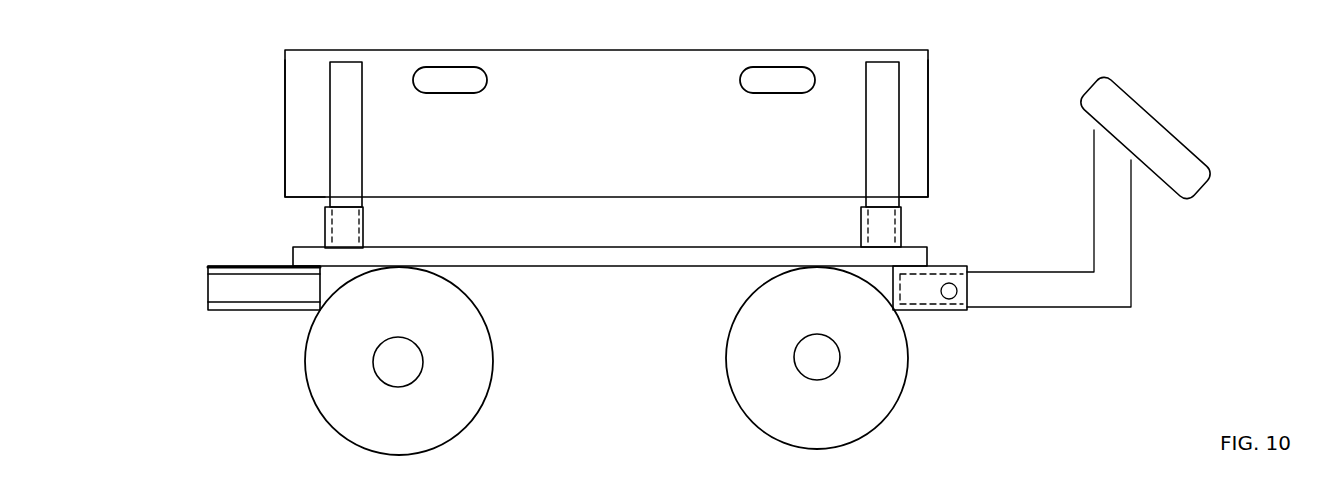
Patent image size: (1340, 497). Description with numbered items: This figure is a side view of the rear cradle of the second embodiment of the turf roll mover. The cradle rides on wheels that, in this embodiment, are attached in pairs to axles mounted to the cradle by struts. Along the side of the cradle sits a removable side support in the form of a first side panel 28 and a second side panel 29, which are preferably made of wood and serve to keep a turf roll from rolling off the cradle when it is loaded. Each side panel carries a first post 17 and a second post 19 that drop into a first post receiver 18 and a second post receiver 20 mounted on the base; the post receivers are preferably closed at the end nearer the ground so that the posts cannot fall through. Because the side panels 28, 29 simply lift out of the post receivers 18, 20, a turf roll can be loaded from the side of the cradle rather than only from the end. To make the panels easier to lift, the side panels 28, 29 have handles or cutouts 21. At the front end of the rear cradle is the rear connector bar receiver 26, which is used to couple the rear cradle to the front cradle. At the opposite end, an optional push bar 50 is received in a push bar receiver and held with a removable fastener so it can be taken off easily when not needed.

The first post 17 is at (340, 171).
The first post receiver 18 is at (340, 218).
The second post 19 is at (886, 172).
The second post receiver 20 is at (885, 237).
The handles or cutouts 21 is at (772, 78).
The rear connector bar receiver 26 is at (237, 288).
The first side panel 28 is at (312, 112).
The second side panel 29 is at (918, 96).
The push bar 50 is at (1171, 112).